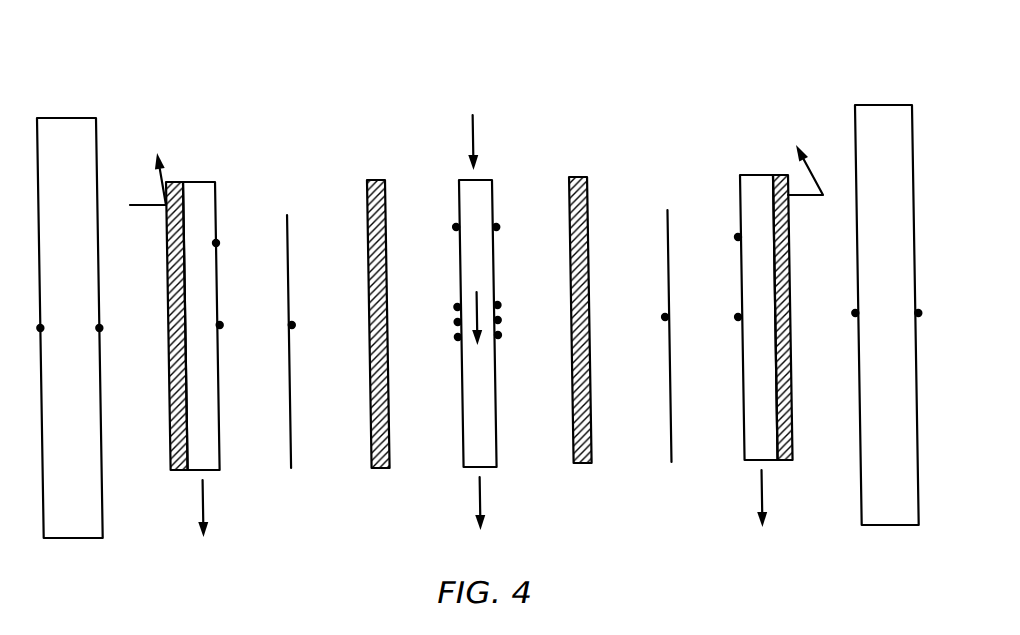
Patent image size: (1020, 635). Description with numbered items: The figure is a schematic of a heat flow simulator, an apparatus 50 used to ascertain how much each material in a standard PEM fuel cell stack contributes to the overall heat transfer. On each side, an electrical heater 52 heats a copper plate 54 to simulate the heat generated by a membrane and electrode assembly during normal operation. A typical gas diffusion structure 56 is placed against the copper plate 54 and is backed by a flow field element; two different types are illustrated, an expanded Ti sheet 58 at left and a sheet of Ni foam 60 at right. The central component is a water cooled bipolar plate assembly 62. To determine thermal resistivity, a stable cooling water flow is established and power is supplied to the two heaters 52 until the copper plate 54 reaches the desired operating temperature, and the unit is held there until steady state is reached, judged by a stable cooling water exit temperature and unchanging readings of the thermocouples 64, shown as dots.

The apparatus 50 is at (628, 83).
The electrical heater 52 is at (169, 182).
The copper plate 54 is at (212, 182).
The gas diffusion structure 56 is at (284, 215).
The expanded Ti sheet 58 is at (374, 180).
The sheet of Ni foam 60 is at (574, 177).
The water cooled bipolar plate assembly 62 is at (489, 180).
The thermocouples 64 is at (212, 243).